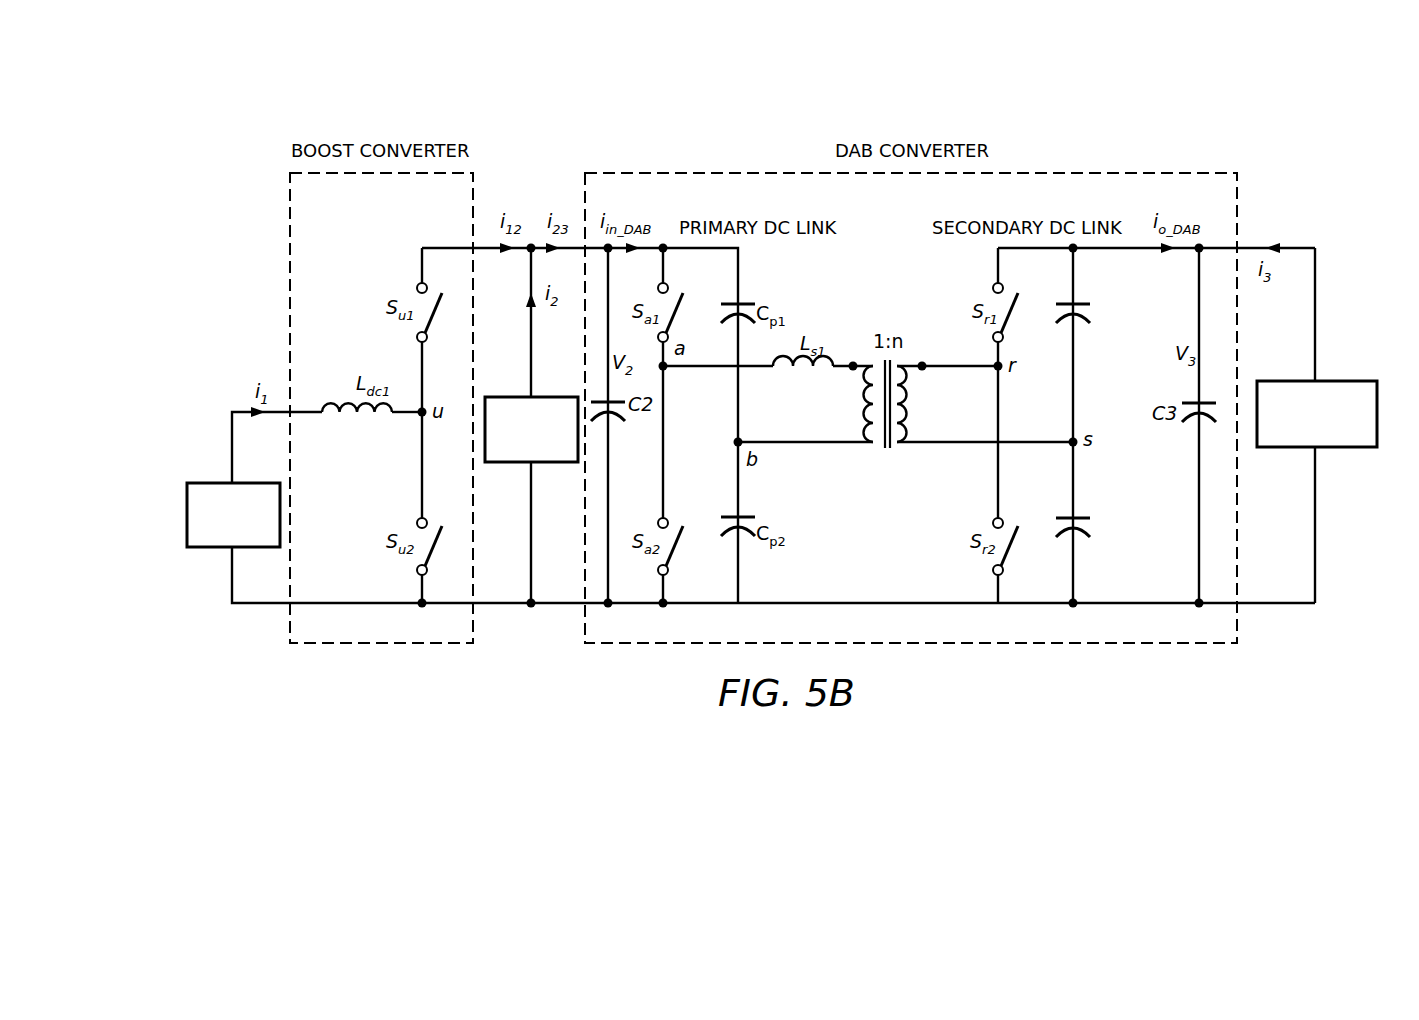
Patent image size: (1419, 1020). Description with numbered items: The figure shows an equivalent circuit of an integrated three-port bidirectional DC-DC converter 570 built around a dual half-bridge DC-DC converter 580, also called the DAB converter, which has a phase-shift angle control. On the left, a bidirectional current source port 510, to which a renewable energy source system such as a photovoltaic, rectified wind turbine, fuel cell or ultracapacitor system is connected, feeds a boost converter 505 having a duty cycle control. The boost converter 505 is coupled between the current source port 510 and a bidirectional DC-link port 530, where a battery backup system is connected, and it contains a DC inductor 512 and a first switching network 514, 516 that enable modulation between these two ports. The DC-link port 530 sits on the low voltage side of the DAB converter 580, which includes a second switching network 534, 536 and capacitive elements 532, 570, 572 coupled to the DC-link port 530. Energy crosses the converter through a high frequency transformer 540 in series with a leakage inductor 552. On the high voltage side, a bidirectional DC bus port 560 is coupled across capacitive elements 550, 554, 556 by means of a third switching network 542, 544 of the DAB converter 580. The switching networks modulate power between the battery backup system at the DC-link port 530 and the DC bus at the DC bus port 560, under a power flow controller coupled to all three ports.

The boost converter 505 is at (290, 222).
The bidirectional current source port 510 is at (200, 483).
The DC inductor 512 is at (325, 402).
The first switching network 514 is at (438, 302).
The first switching network 516 is at (438, 540).
The bidirectional DC-link port 530 is at (507, 397).
The capacitive element 532 is at (622, 420).
The second switching network 534 is at (680, 302).
The second switching network 536 is at (680, 545).
The high frequency transformer 540 is at (900, 360).
The third switching network 542 is at (1015, 302).
The third switching network 544 is at (1015, 540).
The capacitive element 550 is at (1183, 403).
The leakage inductor 552 is at (812, 372).
The capacitive element 554 is at (1080, 304).
The capacitive element 556 is at (1080, 518).
The bidirectional DC bus port 560 is at (1340, 381).
The integrated three-port bidirectional DC-DC converter 570 is at (750, 304).
The capacitive element 572 is at (750, 517).
The dual half-bridge DC-DC converter 580 is at (1160, 173).